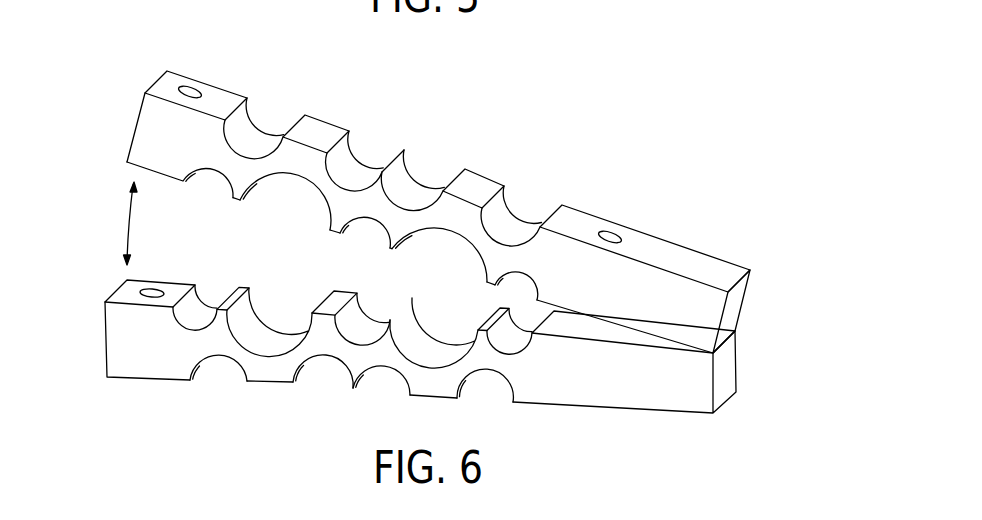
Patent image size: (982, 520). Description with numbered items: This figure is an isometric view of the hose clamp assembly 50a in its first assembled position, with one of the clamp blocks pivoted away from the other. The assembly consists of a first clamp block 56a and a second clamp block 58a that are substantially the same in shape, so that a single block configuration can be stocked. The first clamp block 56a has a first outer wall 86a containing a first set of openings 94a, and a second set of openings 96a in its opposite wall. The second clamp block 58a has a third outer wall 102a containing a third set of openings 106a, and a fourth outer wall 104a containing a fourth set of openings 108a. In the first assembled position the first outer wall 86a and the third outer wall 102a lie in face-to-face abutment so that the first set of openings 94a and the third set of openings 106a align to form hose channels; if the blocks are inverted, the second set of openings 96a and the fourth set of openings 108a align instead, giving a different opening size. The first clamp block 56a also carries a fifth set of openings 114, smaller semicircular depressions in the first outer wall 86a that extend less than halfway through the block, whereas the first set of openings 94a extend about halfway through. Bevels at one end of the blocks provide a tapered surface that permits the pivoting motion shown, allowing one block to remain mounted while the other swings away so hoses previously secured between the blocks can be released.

The hose clamp assembly 50a is at (150, 42).
The second clamp block 58a is at (704, 260).
The first clamp block 56a is at (631, 393).
The fourth set of openings 108a is at (276, 110).
The fourth outer wall 104a is at (653, 247).
The third outer wall 102a is at (166, 178).
The third set of openings 106a is at (440, 253).
The fifth set of openings 114 is at (217, 293).
The first set of openings 94a is at (454, 336).
The first outer wall 86a is at (562, 320).
The second set of openings 96a is at (322, 380).